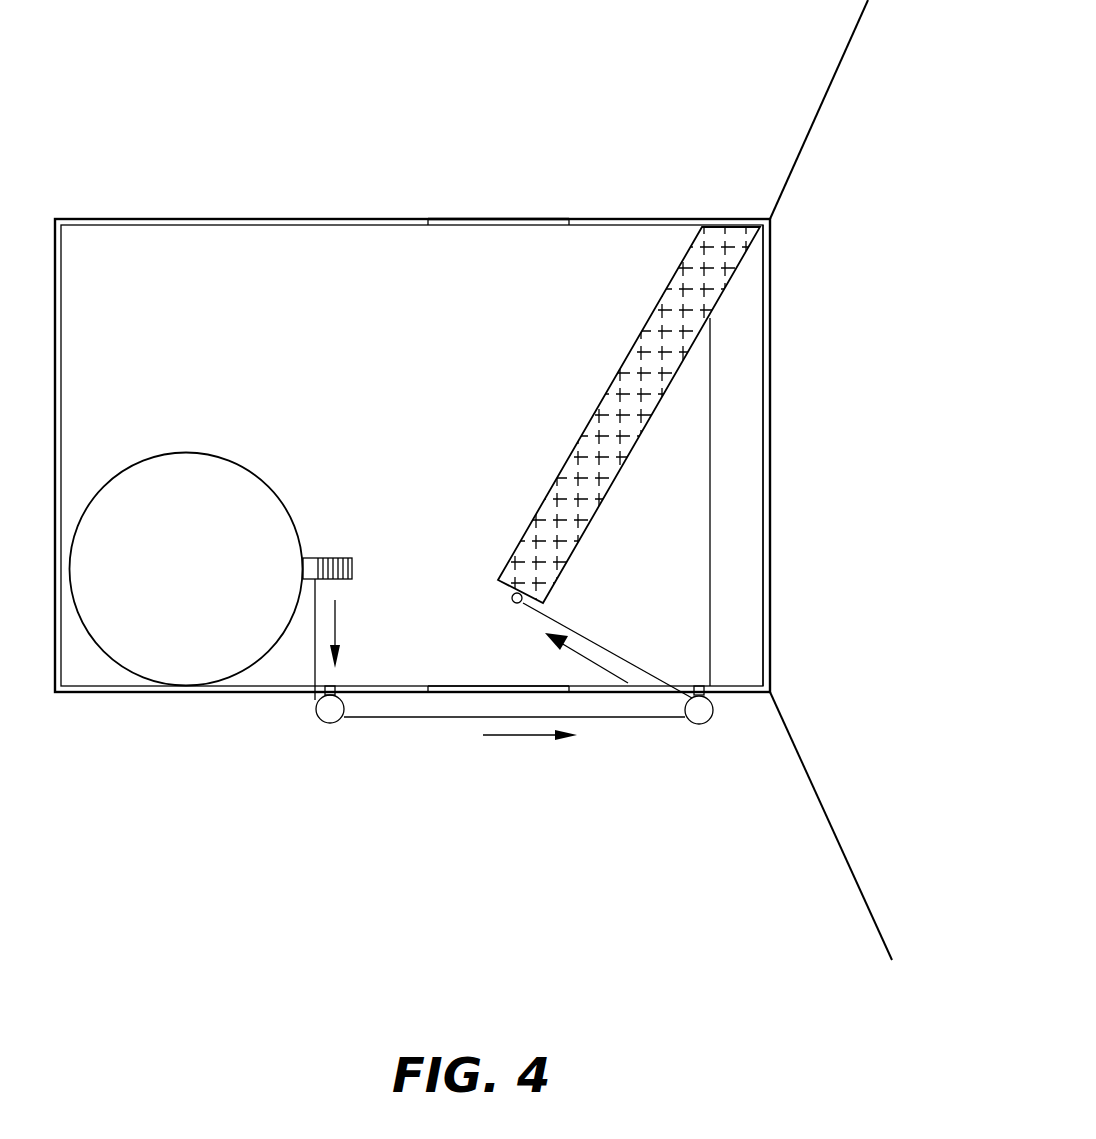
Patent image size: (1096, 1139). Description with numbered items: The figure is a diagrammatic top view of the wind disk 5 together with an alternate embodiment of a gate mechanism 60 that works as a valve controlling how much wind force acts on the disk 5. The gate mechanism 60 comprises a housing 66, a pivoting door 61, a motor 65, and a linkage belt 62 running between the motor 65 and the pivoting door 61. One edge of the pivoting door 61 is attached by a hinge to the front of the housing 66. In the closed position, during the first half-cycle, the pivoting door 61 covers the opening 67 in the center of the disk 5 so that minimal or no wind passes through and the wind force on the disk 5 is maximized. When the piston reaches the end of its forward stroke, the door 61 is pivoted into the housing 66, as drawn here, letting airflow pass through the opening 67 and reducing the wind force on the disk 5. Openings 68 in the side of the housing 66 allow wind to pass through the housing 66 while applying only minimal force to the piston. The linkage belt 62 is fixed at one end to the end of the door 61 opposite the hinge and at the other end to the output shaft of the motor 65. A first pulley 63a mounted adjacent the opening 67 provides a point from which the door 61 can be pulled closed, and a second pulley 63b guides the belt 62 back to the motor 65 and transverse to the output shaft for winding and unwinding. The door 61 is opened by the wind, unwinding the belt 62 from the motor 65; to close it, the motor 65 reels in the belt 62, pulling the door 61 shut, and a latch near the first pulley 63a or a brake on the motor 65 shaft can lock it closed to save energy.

The disk 5 is at (847, 862).
The gate mechanism 60 is at (403, 110).
The pivoting door 61 is at (580, 408).
The linkage belt 62 is at (420, 718).
The first pulley 63a is at (697, 726).
The second pulley 63b is at (318, 722).
The motor 65 is at (146, 452).
The housing 66 is at (177, 218).
The opening 67 is at (806, 446).
The openings 68 is at (509, 180).